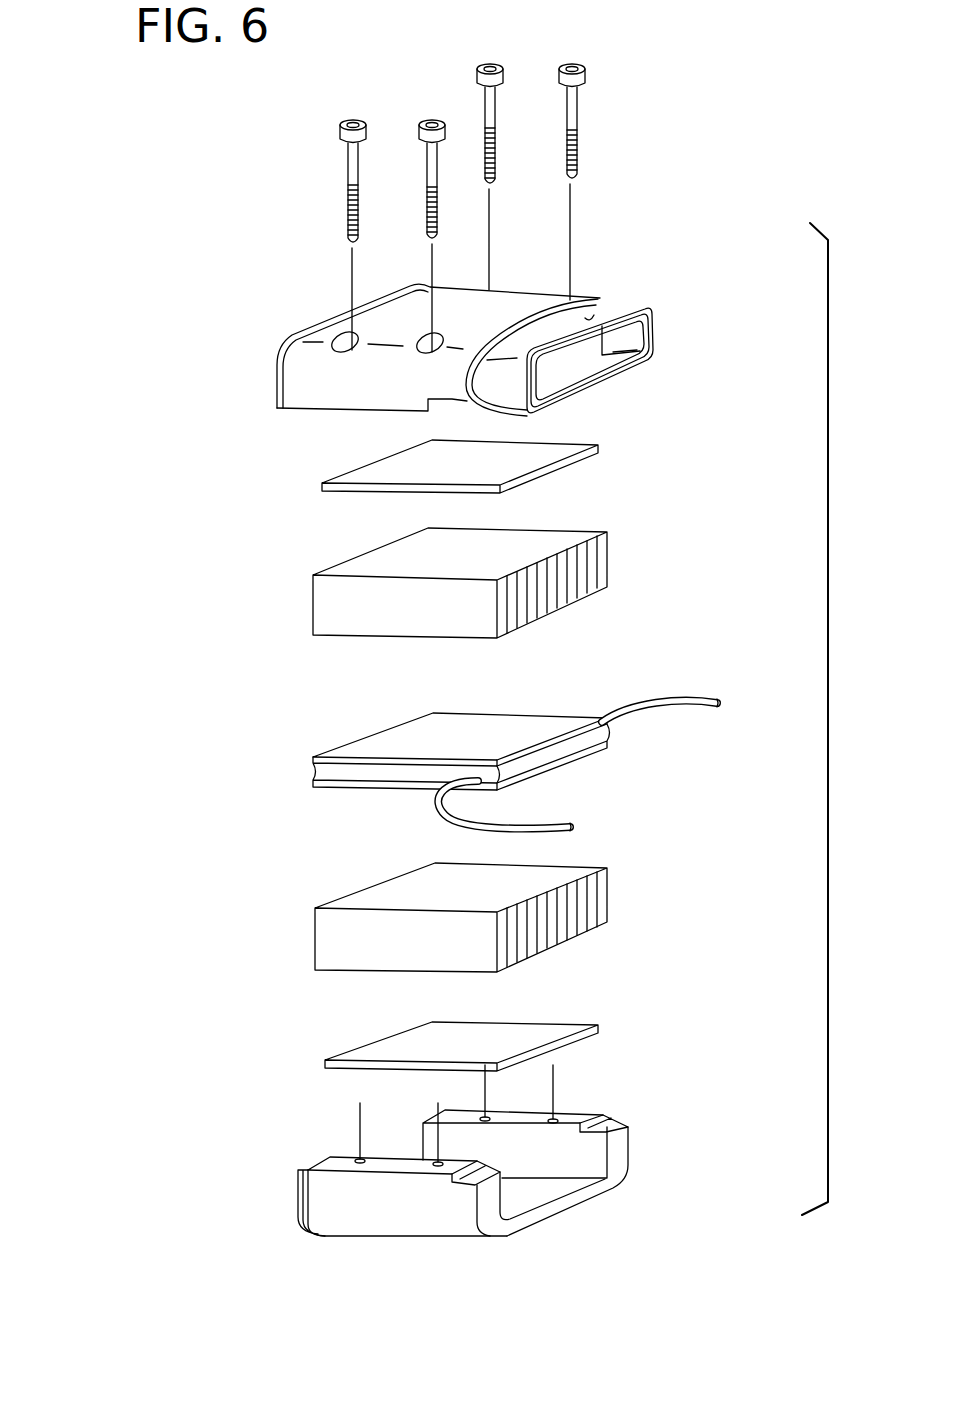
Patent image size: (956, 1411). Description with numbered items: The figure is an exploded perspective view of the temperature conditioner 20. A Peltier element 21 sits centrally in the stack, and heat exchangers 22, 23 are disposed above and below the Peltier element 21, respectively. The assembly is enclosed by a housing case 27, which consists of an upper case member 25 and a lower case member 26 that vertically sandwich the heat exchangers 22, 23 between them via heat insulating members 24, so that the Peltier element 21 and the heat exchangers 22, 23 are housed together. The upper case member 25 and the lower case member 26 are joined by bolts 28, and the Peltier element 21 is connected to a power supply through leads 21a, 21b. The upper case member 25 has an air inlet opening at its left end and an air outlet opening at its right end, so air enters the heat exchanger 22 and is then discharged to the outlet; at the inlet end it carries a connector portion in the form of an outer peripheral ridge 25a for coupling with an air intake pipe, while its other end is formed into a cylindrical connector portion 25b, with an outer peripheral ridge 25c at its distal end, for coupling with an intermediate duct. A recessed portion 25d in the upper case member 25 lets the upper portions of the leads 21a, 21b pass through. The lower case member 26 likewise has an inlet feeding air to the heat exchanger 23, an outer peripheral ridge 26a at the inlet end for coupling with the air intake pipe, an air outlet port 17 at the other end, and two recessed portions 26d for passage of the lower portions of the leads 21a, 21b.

The air outlet port 17 is at (596, 1148).
The temperature conditioner 20 is at (200, 287).
The Peltier element 21 is at (378, 750).
The lead 21a is at (665, 698).
The lead 21b is at (540, 828).
The heat exchanger 22 is at (372, 562).
The heat exchanger 23 is at (373, 896).
The heat insulating member 24 is at (372, 470).
The upper case member 25 is at (270, 358).
The outer peripheral ridge 25a is at (278, 387).
The cylindrical connector portion 25b is at (592, 316).
The outer peripheral ridge 25c is at (655, 340).
The recessed portion 25d is at (460, 401).
The lower case member 26 is at (292, 1192).
The outer peripheral ridge 26a is at (298, 1214).
The recessed portion 26d is at (612, 1122).
The housing case 27 is at (303, 318).
The bolt 28 is at (350, 163).